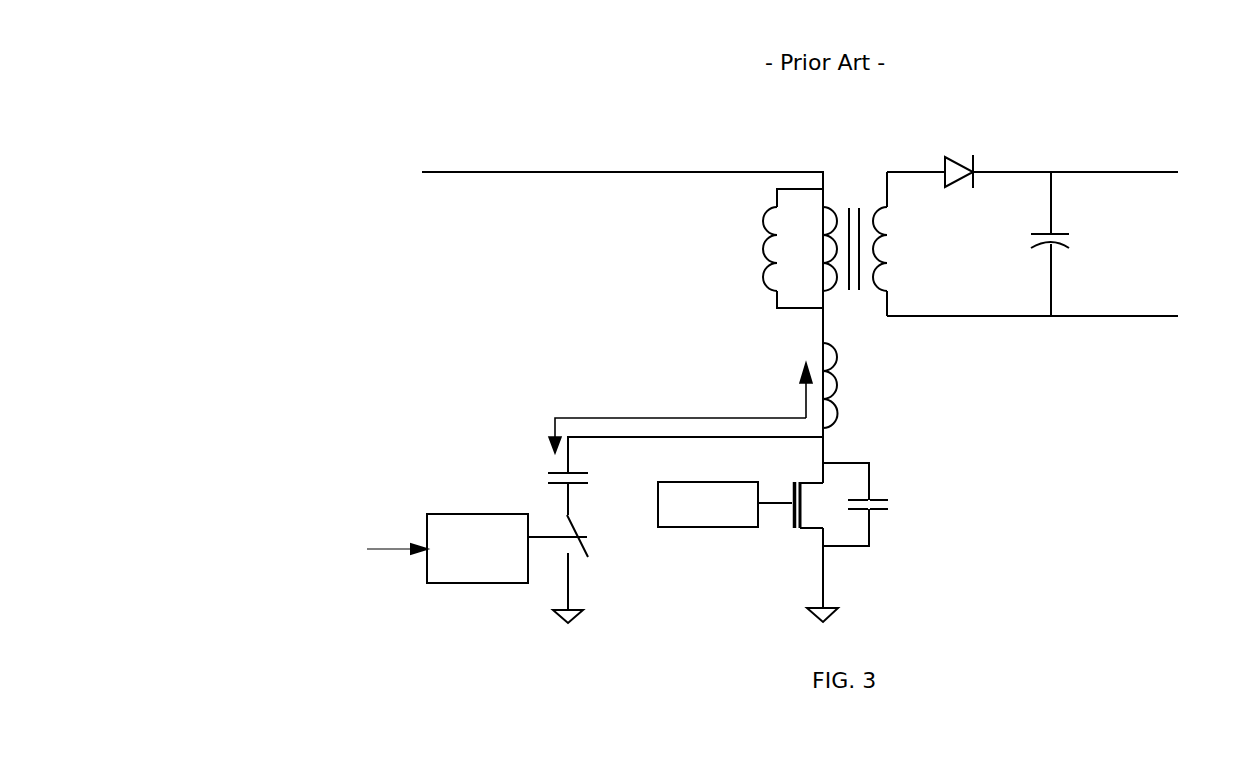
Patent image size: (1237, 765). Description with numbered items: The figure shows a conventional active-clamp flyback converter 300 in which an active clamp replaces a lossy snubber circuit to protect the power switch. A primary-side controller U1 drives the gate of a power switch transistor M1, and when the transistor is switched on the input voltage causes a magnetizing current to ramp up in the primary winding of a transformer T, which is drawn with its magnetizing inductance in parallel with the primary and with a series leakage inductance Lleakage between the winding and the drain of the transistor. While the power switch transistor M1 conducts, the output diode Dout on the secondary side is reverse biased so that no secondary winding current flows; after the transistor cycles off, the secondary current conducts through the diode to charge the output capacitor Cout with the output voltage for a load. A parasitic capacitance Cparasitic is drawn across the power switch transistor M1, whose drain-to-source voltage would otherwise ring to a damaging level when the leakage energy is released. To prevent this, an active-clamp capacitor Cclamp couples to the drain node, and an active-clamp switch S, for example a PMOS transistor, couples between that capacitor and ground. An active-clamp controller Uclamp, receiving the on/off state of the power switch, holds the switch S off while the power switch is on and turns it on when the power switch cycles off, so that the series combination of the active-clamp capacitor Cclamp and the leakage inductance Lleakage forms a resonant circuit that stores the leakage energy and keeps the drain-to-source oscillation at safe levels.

The flyback converter 300 is at (324, 114).
The transformer T is at (799, 236).
The output diode Dout is at (959, 156).
The output capacitor Cout is at (1076, 244).
The leakage inductance Lleakage is at (879, 385).
The active-clamp capacitor Cclamp is at (527, 480).
The active-clamp switch S is at (572, 551).
The active-clamp controller Uclamp is at (477, 548).
The primary-side controller U1 is at (708, 504).
The power switch transistor M1 is at (790, 521).
The parasitic capacitance Cparasitic is at (909, 504).